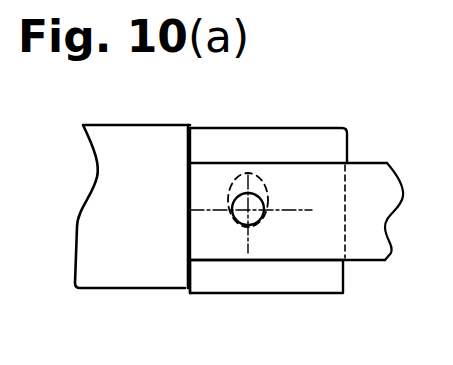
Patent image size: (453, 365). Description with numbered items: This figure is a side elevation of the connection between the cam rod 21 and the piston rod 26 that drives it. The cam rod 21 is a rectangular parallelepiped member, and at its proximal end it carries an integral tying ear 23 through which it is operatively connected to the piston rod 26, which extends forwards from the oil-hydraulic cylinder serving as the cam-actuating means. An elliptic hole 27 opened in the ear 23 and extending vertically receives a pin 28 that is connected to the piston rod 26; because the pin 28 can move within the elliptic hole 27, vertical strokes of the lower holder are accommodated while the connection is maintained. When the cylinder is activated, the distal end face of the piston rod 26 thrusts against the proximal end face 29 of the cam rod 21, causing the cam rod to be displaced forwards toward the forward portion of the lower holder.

The cam rod 21 is at (140, 272).
The tying ear 23 is at (297, 280).
The piston rod 26 is at (358, 252).
The elliptic hole 27 is at (282, 168).
The pin 28 is at (264, 205).
The proximal end face 29 is at (190, 270).